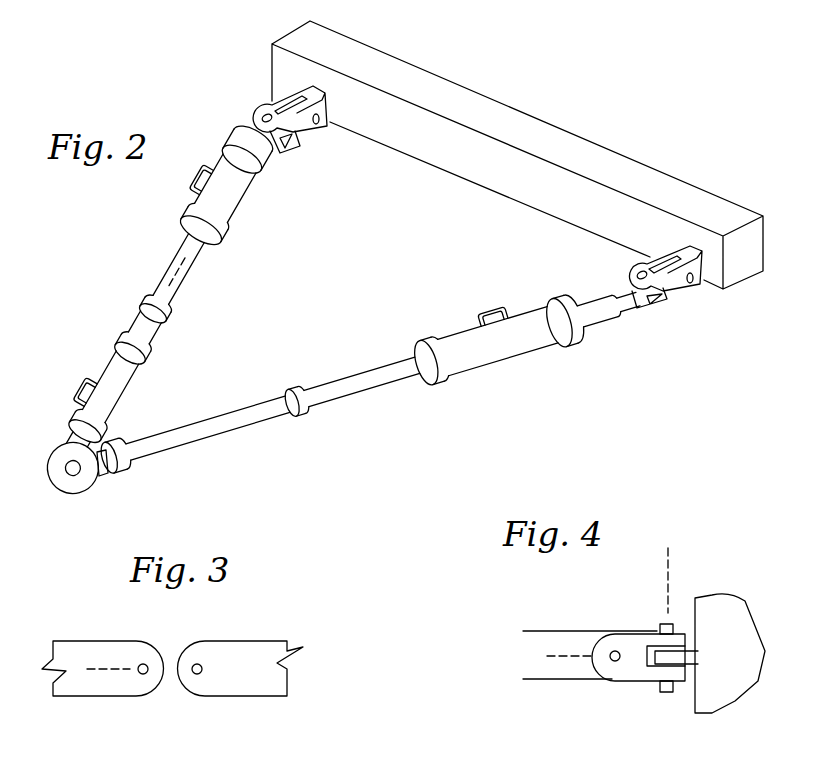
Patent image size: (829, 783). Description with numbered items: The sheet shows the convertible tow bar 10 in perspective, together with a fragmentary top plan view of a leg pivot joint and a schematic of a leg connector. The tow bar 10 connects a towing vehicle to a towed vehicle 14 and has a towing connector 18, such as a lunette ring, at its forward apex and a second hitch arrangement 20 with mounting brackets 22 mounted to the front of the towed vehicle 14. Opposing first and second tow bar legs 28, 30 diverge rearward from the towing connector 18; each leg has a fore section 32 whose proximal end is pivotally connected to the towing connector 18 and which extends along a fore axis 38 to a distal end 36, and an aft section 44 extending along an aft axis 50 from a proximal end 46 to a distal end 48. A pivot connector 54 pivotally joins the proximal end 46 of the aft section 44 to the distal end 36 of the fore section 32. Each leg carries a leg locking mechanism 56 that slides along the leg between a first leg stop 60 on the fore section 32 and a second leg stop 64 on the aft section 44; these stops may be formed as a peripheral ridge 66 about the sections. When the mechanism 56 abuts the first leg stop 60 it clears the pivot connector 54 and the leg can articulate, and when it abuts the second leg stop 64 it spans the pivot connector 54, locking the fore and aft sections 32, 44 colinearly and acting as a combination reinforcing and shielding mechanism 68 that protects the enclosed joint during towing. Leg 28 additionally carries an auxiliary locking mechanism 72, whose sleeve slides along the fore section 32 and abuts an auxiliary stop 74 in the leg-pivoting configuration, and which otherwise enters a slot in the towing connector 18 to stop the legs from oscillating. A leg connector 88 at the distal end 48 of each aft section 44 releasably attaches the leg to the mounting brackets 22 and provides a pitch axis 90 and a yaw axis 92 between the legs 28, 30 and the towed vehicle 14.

In FIG. 2, the convertible tow bar 10 is at (594, 76).
In FIG. 3, the convertible tow bar 10 is at (290, 623).
In FIG. 4, the convertible tow bar 10 is at (714, 566).
In FIG. 2, the towed vehicle 14 is at (562, 153).
In FIG. 4, the towed vehicle 14 is at (733, 660).
In FIG. 2, the towing connector 18 is at (77, 488).
In FIG. 2, the second hitch arrangement 20 is at (245, 65).
In FIG. 4, the second hitch arrangement 20 is at (679, 693).
In FIG. 2, the mounting brackets 22 is at (297, 92).
In FIG. 4, the mounting brackets 22 is at (692, 667).
In FIG. 2, the first tow bar leg 28 is at (177, 250).
In FIG. 2, the second tow bar leg 30 is at (387, 386).
In FIG. 2, the fore section 32 is at (155, 288).
In FIG. 3, the fore section 32 is at (83, 653).
In FIG. 3, the distal end of fore section 36 is at (123, 657).
In FIG. 2, the fore axis 38 is at (181, 269).
In FIG. 3, the fore axis 38 is at (107, 668).
In FIG. 2, the aft section 44 is at (607, 314).
In FIG. 3, the aft section 44 is at (252, 658).
In FIG. 4, the aft section 44 is at (542, 637).
In FIG. 3, the proximal end of aft section 46 is at (212, 655).
In FIG. 2, the distal end of aft section 48 is at (595, 293).
In FIG. 4, the distal end of aft section 48 is at (582, 638).
In FIG. 4, the aft axis 50 is at (557, 652).
In FIG. 3, the pivot connector 54 is at (167, 688).
In FIG. 2, the leg locking mechanism 56 is at (364, 271).
In FIG. 2, the first leg stop 60 is at (173, 325).
In FIG. 2, the second leg stop 64 is at (237, 133).
In FIG. 2, the peripheral ridge 66 is at (292, 382).
In FIG. 2, the combination reinforcing and shielding mechanism 68 is at (247, 205).
In FIG. 2, the auxiliary locking mechanism 72 is at (127, 408).
In FIG. 2, the auxiliary stop 74 is at (118, 347).
In FIG. 2, the leg connector 88 is at (265, 102).
In FIG. 4, the leg connector 88 is at (633, 672).
In FIG. 4, the pitch axis 90 is at (670, 577).
In FIG. 4, the yaw axis 92 is at (617, 649).